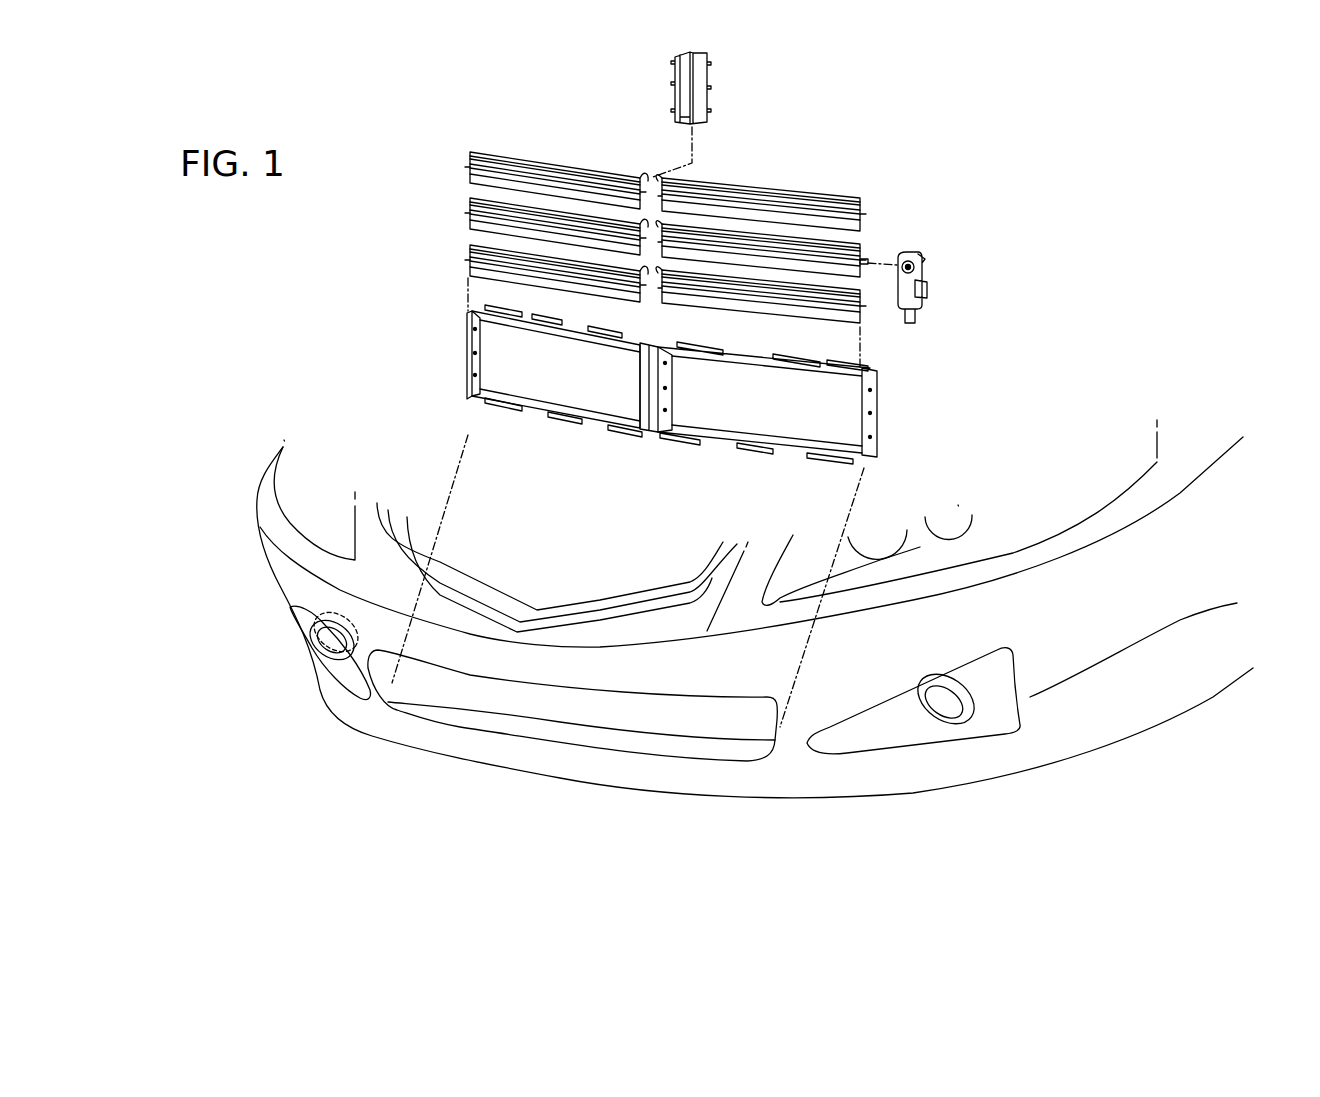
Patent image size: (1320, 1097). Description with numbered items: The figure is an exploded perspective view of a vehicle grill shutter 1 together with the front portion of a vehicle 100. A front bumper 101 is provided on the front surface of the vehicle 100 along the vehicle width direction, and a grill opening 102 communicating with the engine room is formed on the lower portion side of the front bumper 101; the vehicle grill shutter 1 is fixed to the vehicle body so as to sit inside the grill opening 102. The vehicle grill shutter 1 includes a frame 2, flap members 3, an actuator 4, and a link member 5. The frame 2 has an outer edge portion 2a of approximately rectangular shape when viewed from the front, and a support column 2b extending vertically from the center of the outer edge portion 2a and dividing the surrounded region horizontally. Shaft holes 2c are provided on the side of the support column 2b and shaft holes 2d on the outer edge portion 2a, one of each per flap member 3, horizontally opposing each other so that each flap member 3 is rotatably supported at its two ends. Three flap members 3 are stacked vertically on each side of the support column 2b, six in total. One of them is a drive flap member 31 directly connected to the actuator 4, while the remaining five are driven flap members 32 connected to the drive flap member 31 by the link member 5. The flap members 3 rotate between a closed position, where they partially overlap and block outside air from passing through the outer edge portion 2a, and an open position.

The vehicle grill shutter 1 is at (476, 116).
The frame 2 is at (880, 420).
The outer edge portion 2a is at (772, 450).
The support column 2b is at (653, 420).
The shaft holes 2c is at (668, 410).
The shaft holes 2d is at (478, 375).
The flap members 3 is at (675, 258).
The drive flap member 31 is at (866, 262).
The driven flap members 32 is at (863, 308).
The actuator 4 is at (924, 267).
The link member 5 is at (730, 96).
The vehicle 100 is at (360, 752).
The front bumper 101 is at (290, 577).
The grill opening 102 is at (575, 729).